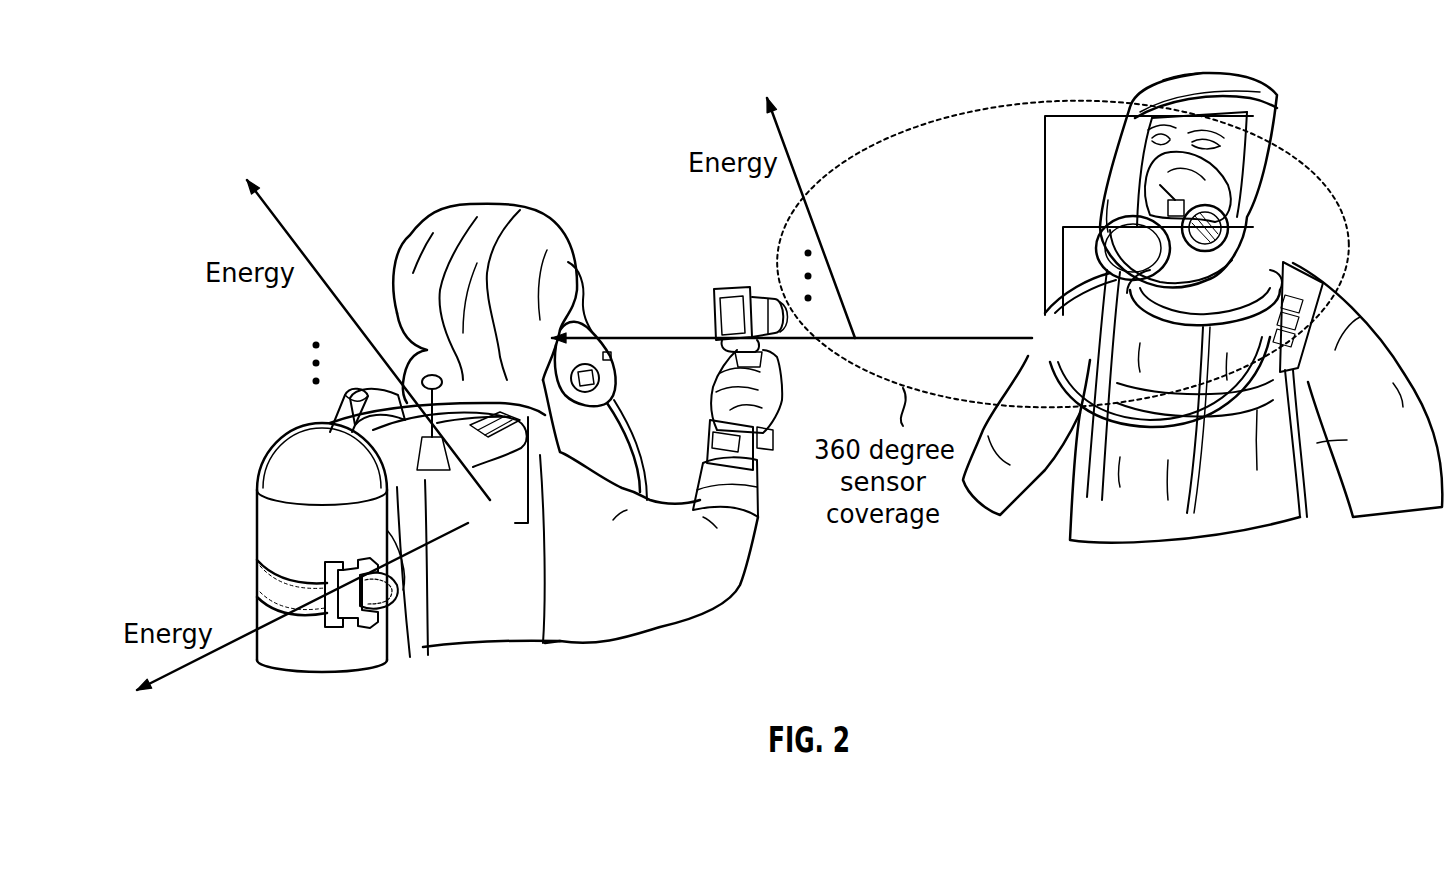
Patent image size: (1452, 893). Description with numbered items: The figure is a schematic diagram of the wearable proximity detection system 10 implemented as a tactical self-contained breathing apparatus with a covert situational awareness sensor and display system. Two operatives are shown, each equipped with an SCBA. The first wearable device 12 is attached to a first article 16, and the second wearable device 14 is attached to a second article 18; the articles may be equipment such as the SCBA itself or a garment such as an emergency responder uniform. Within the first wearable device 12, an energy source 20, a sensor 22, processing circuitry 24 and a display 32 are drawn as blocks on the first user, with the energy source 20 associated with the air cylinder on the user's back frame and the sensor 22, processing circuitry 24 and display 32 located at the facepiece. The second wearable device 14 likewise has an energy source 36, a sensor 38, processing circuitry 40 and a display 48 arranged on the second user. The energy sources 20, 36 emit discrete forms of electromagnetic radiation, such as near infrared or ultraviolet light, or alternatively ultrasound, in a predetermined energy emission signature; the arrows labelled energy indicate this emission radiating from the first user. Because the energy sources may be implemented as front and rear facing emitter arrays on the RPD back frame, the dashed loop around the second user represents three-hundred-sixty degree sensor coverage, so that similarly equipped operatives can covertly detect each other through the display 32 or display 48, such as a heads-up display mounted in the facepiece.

The wearable proximity detection system 10 is at (335, 128).
The first wearable device 12 is at (600, 308).
The second wearable device 14 is at (1236, 70).
The first article 16 is at (488, 212).
The second article 18 is at (1377, 357).
The energy source 20 is at (506, 542).
The sensor 22 is at (543, 356).
The processing circuitry 24 is at (543, 409).
The display 32 is at (543, 302).
The energy source 36 is at (1069, 356).
The sensor 38 is at (1290, 188).
The processing circuitry 40 is at (1290, 244).
The display 48 is at (1290, 135).